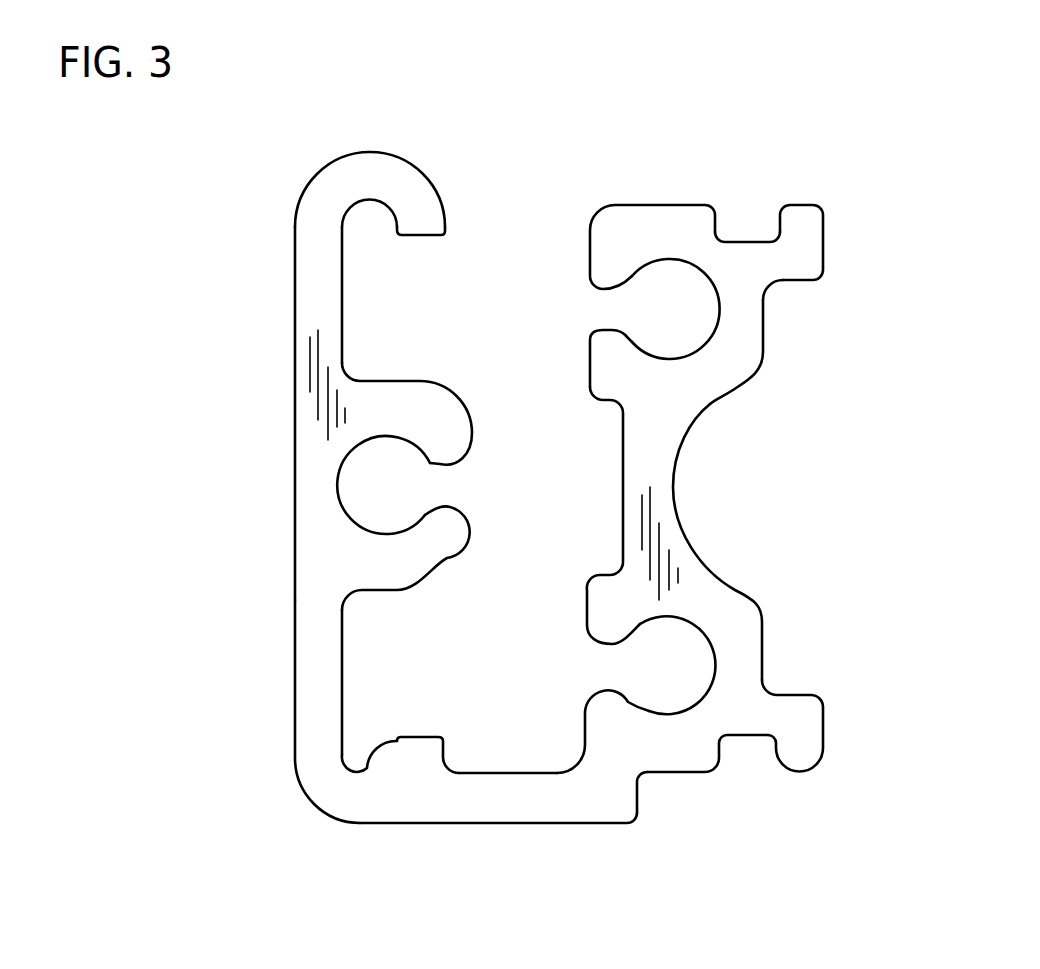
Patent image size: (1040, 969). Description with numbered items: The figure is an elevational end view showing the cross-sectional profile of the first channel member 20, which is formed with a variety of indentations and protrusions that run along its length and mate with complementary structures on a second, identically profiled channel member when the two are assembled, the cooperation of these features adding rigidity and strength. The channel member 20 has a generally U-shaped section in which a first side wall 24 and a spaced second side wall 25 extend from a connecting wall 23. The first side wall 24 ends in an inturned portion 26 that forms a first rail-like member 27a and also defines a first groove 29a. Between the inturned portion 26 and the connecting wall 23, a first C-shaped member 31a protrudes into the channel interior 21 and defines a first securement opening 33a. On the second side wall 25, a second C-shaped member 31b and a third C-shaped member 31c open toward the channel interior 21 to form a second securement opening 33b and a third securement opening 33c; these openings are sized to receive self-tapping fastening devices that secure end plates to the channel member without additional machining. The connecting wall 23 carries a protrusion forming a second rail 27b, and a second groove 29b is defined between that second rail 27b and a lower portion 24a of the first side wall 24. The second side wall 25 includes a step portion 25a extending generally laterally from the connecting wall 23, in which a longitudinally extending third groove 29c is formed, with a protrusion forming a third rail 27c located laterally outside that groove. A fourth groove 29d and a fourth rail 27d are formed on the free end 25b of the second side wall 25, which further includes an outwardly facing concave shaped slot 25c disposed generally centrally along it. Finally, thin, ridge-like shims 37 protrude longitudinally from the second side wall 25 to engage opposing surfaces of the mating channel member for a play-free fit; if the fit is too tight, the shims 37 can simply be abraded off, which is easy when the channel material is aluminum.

The first channel member 20 is at (878, 157).
The channel interior 21 is at (475, 372).
The connecting wall 23 is at (508, 823).
The first side wall 24 is at (293, 343).
The lower portion of first side wall 24a is at (312, 710).
The second side wall 25 is at (757, 357).
The step portion 25a is at (680, 733).
The free end of second side wall 25b is at (652, 230).
The concave shaped slot 25c is at (705, 492).
The inturned portion 26 is at (377, 168).
The first rail-like member 27a is at (422, 220).
The second rail 27b is at (420, 758).
The third rail 27c is at (800, 760).
The fourth rail 27d is at (803, 224).
The first groove 29a is at (367, 223).
The second groove 29b is at (372, 774).
The third groove 29c is at (753, 755).
The fourth groove 29d is at (748, 242).
The first C-shaped member 31a is at (393, 535).
The second C-shaped member 31b is at (605, 708).
The third C-shaped member 31c is at (613, 365).
The first securement opening 33a is at (385, 481).
The second securement opening 33b is at (683, 668).
The third securement opening 33c is at (650, 300).
The shims 37 is at (823, 242).